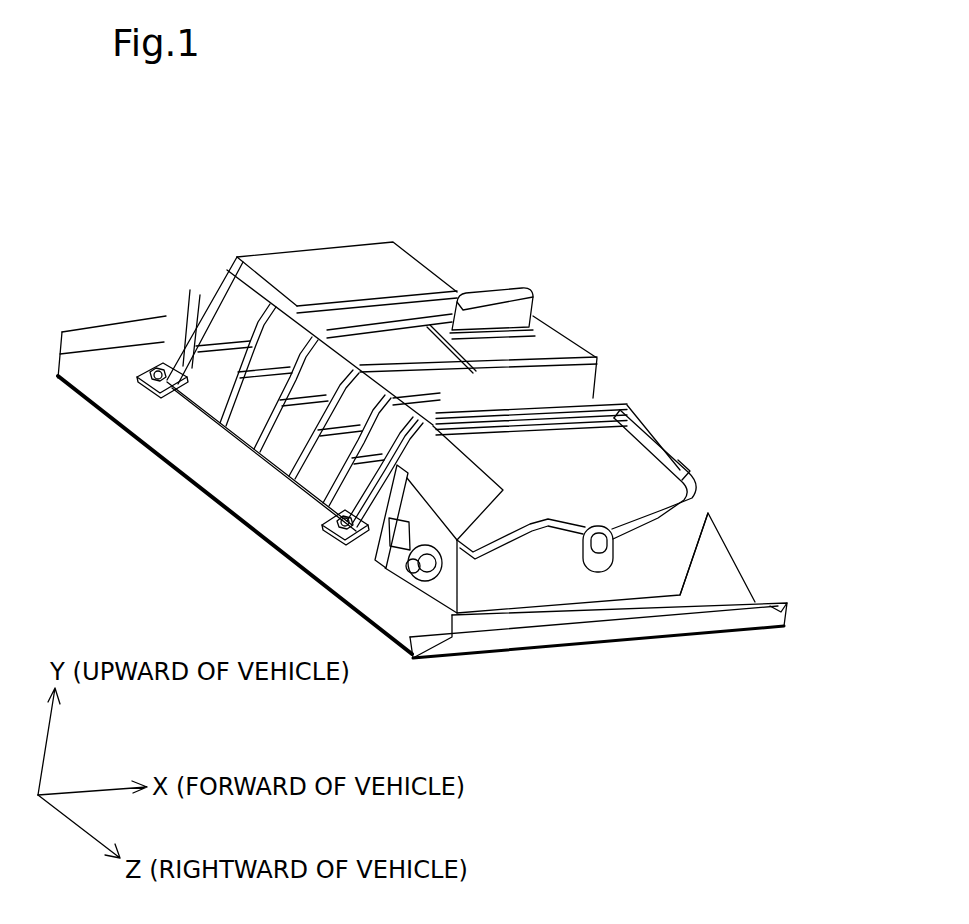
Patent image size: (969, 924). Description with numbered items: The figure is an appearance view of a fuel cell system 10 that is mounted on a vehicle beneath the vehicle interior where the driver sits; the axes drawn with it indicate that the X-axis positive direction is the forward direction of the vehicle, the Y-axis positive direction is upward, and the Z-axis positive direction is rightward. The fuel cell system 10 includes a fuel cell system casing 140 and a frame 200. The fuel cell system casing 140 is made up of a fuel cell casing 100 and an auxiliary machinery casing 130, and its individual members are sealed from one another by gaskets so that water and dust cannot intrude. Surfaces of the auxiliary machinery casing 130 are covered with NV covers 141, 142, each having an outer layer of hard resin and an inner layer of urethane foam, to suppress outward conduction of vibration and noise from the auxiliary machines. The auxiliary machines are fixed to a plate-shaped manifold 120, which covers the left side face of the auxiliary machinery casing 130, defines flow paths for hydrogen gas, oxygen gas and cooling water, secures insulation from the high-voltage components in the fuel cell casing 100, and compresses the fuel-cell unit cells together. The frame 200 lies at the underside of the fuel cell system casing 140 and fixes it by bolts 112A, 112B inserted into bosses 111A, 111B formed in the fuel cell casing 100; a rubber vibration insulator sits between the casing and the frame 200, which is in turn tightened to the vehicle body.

The fuel cell system 10 is at (470, 222).
The fuel cell casing 100 is at (237, 264).
The fuel cell system casing 140 is at (443, 404).
The boss 111A is at (147, 386).
The bolt 112A is at (160, 373).
The boss 111B is at (356, 544).
The bolt 112B is at (330, 518).
The manifold 120 is at (613, 403).
The auxiliary machinery casing 130 is at (673, 461).
The NV cover 141 is at (671, 483).
The NV cover 142 is at (673, 560).
The frame 200 is at (166, 472).